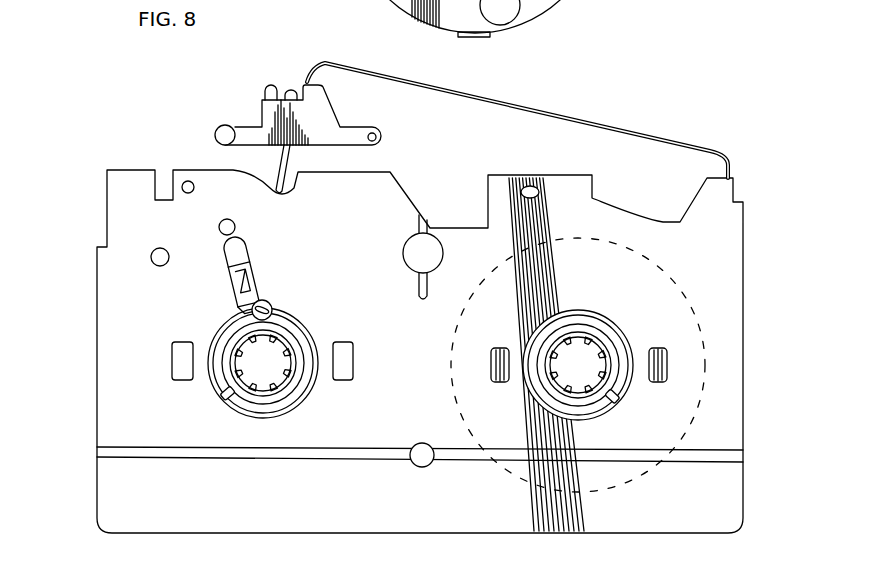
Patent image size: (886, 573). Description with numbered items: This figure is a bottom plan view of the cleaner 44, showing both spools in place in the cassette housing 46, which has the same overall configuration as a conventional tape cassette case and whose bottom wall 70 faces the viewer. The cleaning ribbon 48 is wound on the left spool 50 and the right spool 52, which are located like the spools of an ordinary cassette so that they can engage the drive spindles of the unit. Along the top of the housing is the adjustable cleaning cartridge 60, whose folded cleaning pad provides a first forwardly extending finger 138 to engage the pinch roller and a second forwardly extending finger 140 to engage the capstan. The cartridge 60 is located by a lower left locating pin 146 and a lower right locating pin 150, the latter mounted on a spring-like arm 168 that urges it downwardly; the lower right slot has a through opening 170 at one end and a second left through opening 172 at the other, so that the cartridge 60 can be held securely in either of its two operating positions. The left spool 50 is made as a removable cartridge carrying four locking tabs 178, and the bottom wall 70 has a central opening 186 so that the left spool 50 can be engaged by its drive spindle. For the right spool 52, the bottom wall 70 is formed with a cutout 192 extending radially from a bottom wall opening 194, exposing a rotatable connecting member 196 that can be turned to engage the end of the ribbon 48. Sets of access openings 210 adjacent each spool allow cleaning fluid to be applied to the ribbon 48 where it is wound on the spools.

The cleaner 44 is at (89, 277).
The cassette housing 46 is at (96, 321).
The cleaning ribbon 48 is at (541, 113).
The left spool 50 is at (600, 330).
The right spool 52 is at (292, 390).
The cleaning cartridge 60 is at (231, 116).
The bottom wall 70 is at (408, 334).
The first forwardly extending finger 138 is at (268, 88).
The second forwardly extending finger 140 is at (291, 92).
The lower left locating pin 146 is at (378, 138).
The lower right locating pin 150 is at (216, 137).
The spring-like arm 168 is at (247, 143).
The through opening 170 is at (160, 248).
The second left through opening 172 is at (236, 226).
The locking tabs 178 is at (484, 38).
The central opening 186 is at (616, 398).
The cutout 192 is at (246, 250).
The bottom wall opening 194 is at (225, 396).
The rotatable connecting member 196 is at (268, 304).
The access openings 210 is at (178, 344).